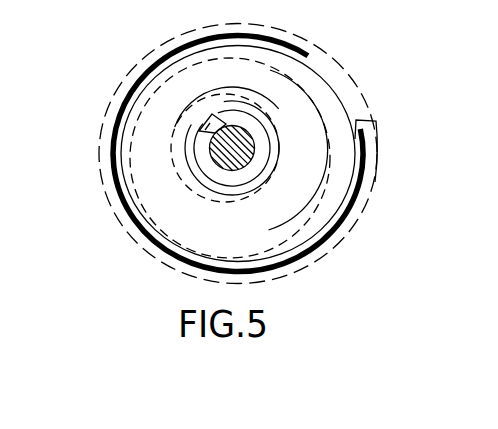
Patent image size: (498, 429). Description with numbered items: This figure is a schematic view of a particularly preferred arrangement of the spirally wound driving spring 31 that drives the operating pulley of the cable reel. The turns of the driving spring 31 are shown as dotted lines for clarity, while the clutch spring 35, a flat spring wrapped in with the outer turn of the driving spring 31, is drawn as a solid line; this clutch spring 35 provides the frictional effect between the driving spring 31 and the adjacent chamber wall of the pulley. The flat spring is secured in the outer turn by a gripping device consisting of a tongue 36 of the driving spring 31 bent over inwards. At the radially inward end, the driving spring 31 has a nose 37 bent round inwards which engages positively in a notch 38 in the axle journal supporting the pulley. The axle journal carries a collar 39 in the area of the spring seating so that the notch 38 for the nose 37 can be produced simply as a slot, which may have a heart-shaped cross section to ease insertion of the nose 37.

The driving spring 31 is at (114, 78).
The clutch spring 35 is at (367, 170).
The tongue 36 is at (357, 128).
The nose 37 is at (207, 122).
The notch 38 is at (215, 131).
The collar 39 is at (233, 117).